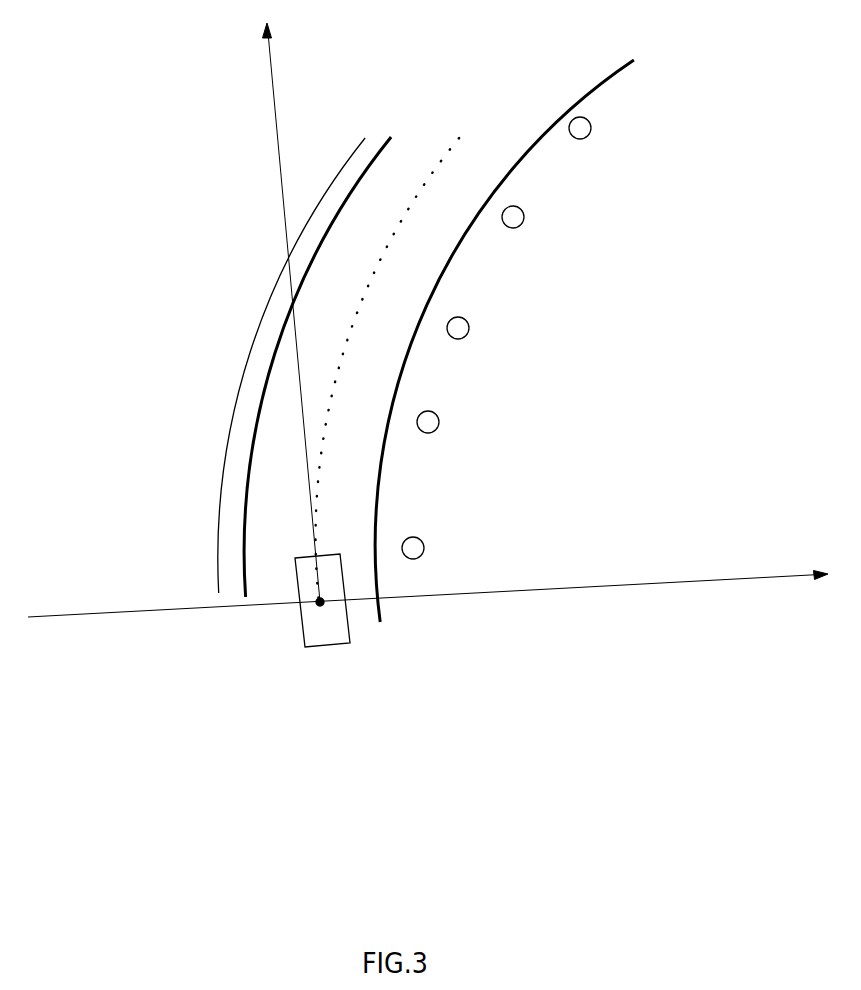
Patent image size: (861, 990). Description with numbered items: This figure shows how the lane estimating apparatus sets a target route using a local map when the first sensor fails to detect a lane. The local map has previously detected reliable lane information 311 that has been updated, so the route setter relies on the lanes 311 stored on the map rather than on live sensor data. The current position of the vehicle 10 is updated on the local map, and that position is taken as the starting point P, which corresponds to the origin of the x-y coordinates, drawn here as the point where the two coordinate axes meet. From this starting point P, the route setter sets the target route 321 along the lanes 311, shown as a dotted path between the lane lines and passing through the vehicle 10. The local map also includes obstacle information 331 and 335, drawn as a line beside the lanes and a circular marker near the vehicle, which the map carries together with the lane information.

The vehicle 10 is at (325, 648).
The starting point P is at (317, 605).
The lane information 311 is at (277, 355).
The target route 321 is at (398, 230).
The obstacle information 331 is at (228, 422).
The obstacle information 335 is at (424, 548).